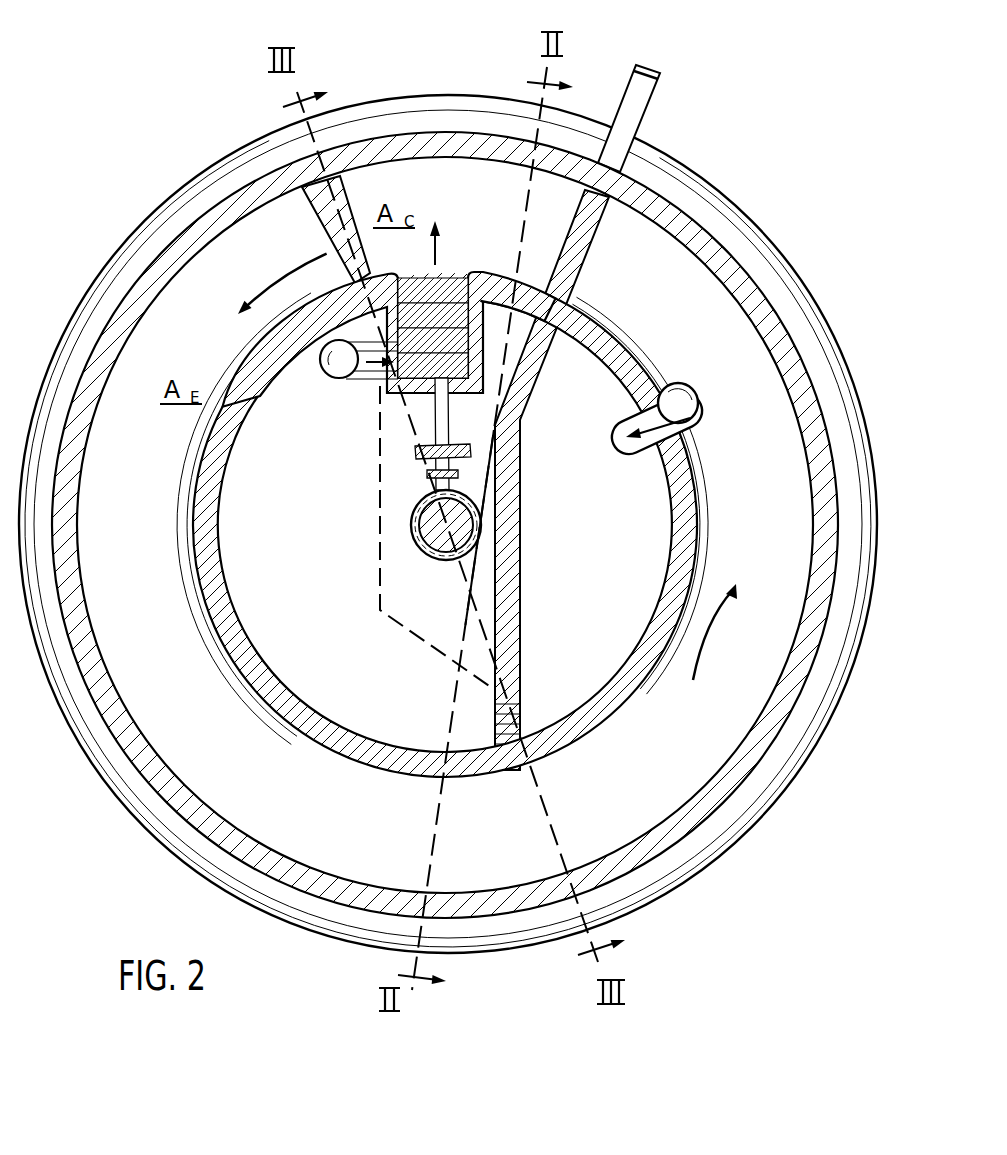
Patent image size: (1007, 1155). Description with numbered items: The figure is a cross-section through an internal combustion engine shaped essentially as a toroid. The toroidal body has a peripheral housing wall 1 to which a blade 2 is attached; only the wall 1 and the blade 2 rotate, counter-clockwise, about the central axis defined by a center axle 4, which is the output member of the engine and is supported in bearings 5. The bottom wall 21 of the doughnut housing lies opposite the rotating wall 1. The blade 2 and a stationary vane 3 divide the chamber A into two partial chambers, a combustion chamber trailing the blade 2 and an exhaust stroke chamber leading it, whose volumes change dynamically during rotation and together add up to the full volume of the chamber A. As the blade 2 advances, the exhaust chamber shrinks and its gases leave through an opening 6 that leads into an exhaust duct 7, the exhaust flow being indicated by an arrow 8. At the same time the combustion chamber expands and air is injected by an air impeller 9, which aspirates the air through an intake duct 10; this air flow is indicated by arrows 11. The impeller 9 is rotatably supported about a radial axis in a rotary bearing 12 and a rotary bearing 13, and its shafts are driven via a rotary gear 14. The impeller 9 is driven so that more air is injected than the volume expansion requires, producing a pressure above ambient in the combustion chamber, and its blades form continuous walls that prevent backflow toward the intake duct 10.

The peripheral housing wall 1 is at (448, 499).
The blade 2 is at (338, 229).
The vane 3 is at (645, 92).
The center axle 4 is at (447, 528).
The bearings 5 is at (415, 530).
The opening 6 is at (681, 383).
The exhaust duct 7 is at (629, 458).
The arrow 8 is at (712, 417).
The air impeller 9 is at (452, 279).
The intake duct 10 is at (330, 379).
The arrows 11 is at (341, 358).
The rotary bearing 12 is at (428, 474).
The rotary bearing 13 is at (447, 393).
The rotary gear 14 is at (418, 452).
The bottom wall 21 is at (255, 377).
The chamber A is at (175, 318).